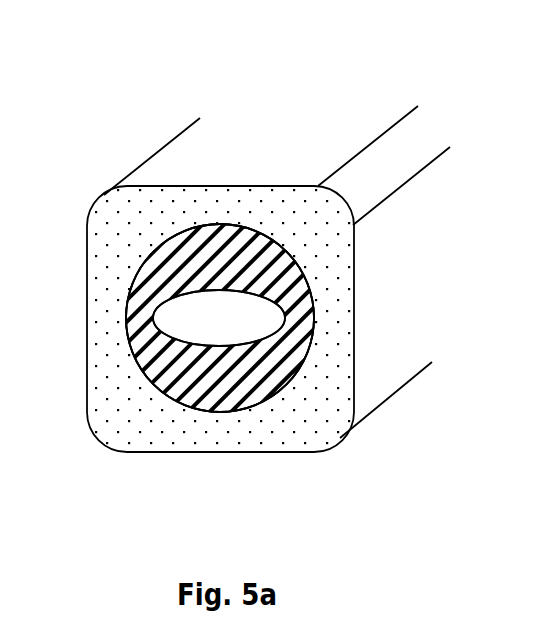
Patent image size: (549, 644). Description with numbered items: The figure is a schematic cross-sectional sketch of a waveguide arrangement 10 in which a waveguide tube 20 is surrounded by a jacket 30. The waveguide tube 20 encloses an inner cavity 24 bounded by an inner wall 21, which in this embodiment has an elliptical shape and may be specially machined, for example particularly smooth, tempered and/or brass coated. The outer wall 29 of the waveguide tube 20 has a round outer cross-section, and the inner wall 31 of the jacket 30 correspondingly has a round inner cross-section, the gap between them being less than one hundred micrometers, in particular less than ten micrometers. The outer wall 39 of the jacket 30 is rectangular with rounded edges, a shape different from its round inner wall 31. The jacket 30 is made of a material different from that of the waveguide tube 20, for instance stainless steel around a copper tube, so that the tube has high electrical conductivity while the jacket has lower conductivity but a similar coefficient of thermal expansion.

The waveguide arrangement 10 is at (247, 79).
The waveguide tube 20 is at (238, 393).
The inner wall 21 is at (225, 292).
The inner cavity 24 is at (200, 323).
The outer wall 29 is at (218, 222).
The jacket 30 is at (148, 427).
The inner wall 31 is at (288, 252).
The outer wall 39 is at (205, 153).